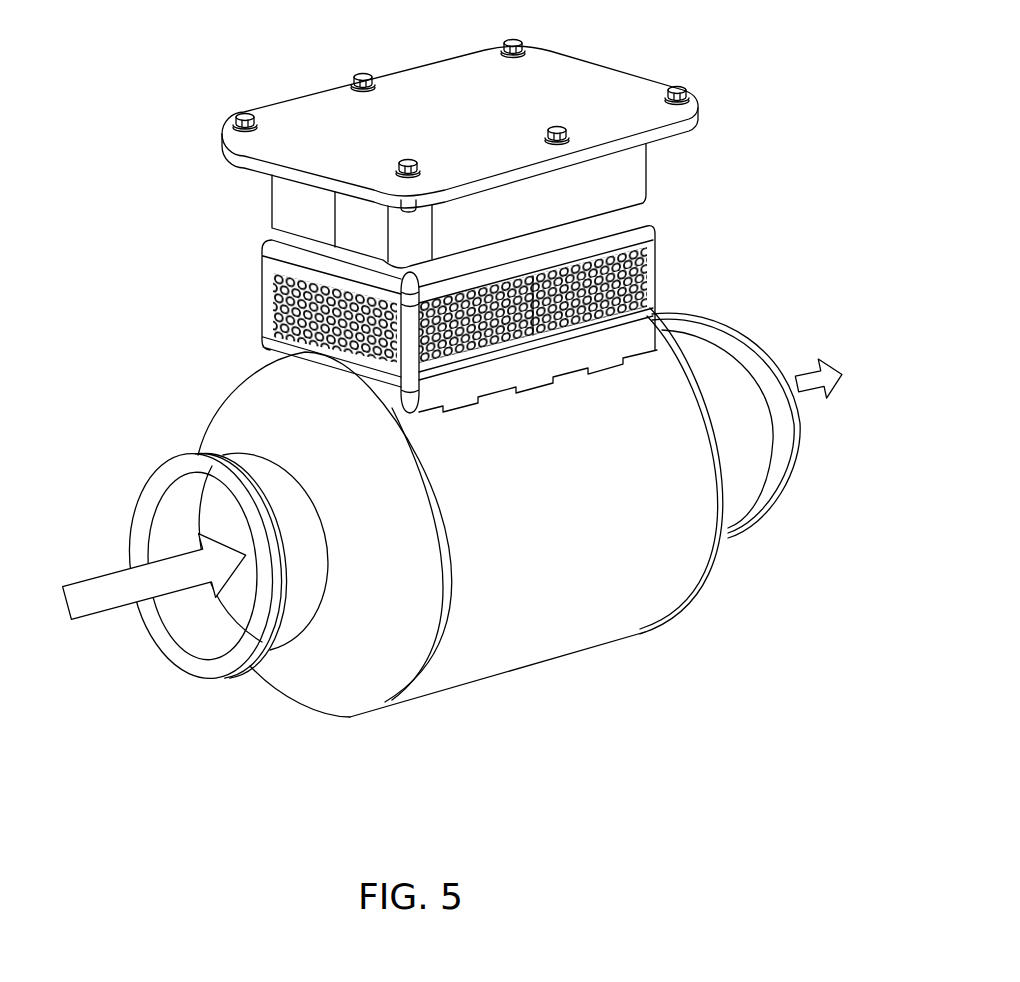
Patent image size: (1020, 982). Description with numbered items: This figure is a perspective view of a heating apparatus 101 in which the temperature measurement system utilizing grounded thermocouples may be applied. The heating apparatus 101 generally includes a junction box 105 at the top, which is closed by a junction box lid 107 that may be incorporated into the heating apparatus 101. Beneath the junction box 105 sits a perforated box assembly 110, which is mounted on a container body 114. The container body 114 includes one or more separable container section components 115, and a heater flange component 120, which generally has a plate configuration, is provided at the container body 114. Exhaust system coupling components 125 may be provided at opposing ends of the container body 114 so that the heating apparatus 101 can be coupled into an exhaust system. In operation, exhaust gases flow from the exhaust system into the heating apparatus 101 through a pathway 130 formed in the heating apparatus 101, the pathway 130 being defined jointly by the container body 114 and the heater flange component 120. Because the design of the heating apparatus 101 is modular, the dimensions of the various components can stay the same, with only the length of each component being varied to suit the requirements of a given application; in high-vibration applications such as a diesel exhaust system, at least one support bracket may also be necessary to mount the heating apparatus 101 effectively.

The heating apparatus 101 is at (148, 255).
The junction box 105 is at (638, 175).
The junction box lid 107 is at (608, 87).
The perforated box assembly 110 is at (644, 262).
The container body 114 is at (593, 647).
The container section component 115 is at (490, 647).
The heater flange component 120 is at (665, 316).
The exhaust system coupling component 125 is at (247, 412).
The pathway 130 is at (193, 553).